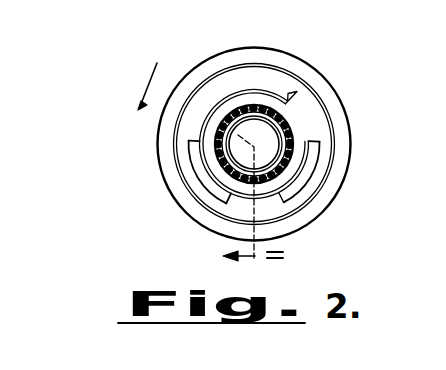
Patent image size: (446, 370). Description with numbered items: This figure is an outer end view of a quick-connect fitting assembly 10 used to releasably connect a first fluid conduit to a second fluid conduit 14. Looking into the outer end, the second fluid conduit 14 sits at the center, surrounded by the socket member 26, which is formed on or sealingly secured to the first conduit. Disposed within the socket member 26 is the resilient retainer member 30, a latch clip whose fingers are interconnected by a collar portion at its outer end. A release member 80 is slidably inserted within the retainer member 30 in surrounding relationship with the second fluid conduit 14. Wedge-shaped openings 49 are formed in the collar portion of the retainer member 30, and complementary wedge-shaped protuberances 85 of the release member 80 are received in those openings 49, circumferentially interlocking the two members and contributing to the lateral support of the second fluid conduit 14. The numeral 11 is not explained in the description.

The quick-connect fitting assembly 10 is at (321, 51).
The housing 11 is at (182, 102).
The second fluid conduit 14 is at (291, 131).
The socket member 26 is at (351, 141).
The retainer member 30 is at (313, 173).
The wedge-shaped openings 49 is at (296, 94).
The release member 80 is at (220, 197).
The wedge-shaped protuberances 85 is at (300, 105).